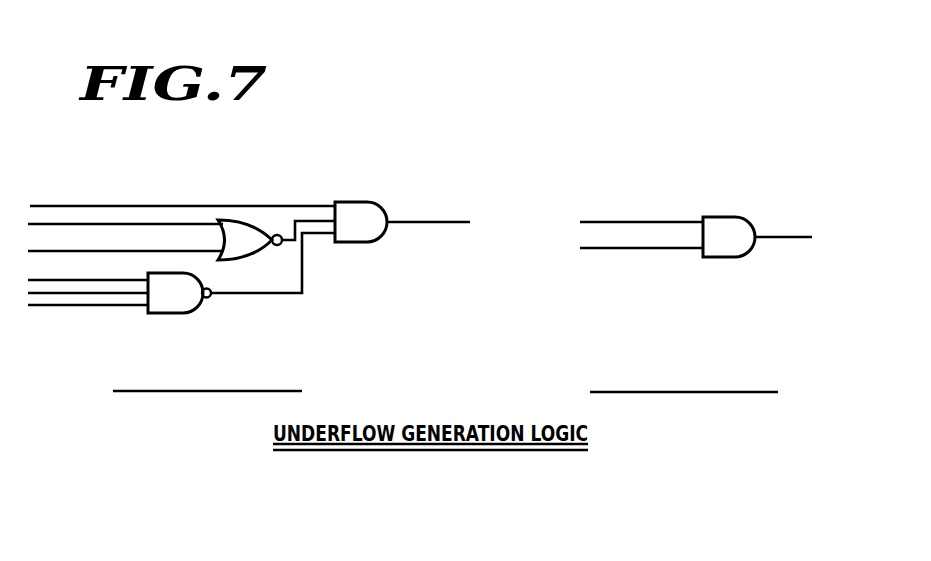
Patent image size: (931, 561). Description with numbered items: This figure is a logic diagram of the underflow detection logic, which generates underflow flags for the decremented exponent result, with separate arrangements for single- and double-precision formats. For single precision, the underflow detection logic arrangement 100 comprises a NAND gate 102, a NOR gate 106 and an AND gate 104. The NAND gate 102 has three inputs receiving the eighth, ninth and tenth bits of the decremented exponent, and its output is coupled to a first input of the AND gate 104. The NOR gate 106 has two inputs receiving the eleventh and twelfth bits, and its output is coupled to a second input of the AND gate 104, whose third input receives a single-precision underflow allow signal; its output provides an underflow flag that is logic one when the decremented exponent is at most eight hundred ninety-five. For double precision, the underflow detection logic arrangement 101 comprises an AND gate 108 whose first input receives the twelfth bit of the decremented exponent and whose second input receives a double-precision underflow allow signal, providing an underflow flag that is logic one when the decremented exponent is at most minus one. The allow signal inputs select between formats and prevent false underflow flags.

The underflow detection logic arrangement 100 is at (292, 163).
The underflow detection logic arrangement 101 is at (719, 165).
The NAND gate 102 is at (185, 313).
The AND gate 104 is at (371, 242).
The NOR gate 106 is at (262, 254).
The AND gate 108 is at (748, 252).